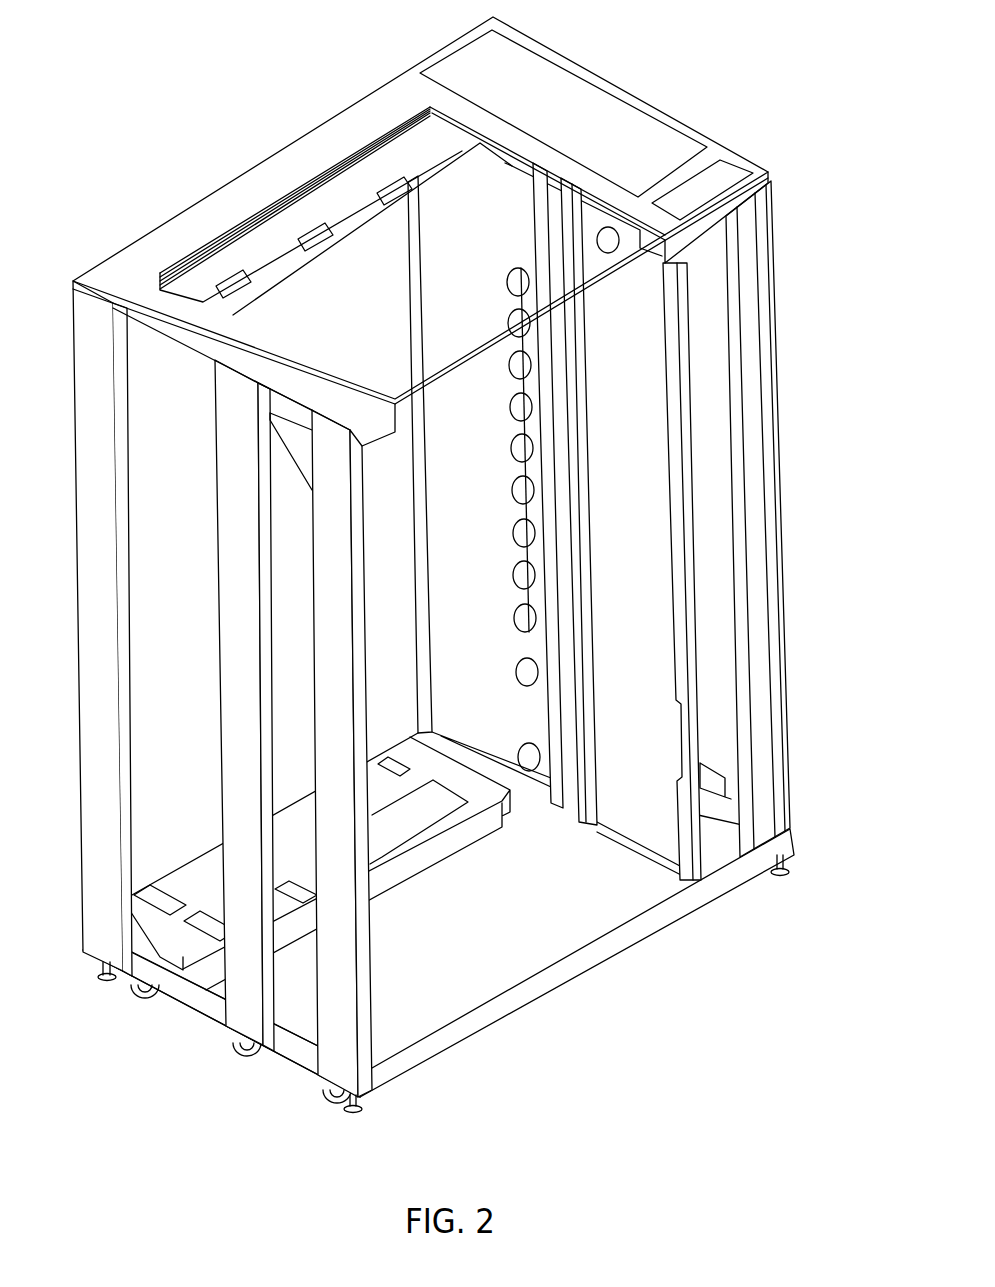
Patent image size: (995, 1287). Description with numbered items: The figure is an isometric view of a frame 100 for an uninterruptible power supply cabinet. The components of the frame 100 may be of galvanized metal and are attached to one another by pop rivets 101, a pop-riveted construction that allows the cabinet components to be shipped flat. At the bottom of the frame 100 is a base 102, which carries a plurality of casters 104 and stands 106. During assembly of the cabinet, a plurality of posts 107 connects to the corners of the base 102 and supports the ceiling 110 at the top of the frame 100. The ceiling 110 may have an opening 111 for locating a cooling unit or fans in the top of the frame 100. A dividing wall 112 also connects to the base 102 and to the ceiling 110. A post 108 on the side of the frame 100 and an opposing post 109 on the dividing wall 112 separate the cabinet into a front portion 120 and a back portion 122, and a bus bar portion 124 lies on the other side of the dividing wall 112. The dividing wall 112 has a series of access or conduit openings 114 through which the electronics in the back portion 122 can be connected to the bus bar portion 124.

The frame 100 is at (161, 227).
The pop rivets 101 is at (107, 317).
The base 102 is at (198, 1002).
The casters 104 is at (248, 1058).
The stands 106 is at (362, 1112).
The posts 107 is at (363, 953).
The post 108 is at (260, 625).
The opposing post 109 is at (583, 527).
The ceiling 110 is at (332, 138).
The opening 111 is at (285, 285).
The dividing wall 112 is at (698, 845).
The access or conduit openings 114 is at (505, 315).
The front portion 120 is at (468, 943).
The back portion 122 is at (207, 898).
The bus bar portion 124 is at (722, 817).